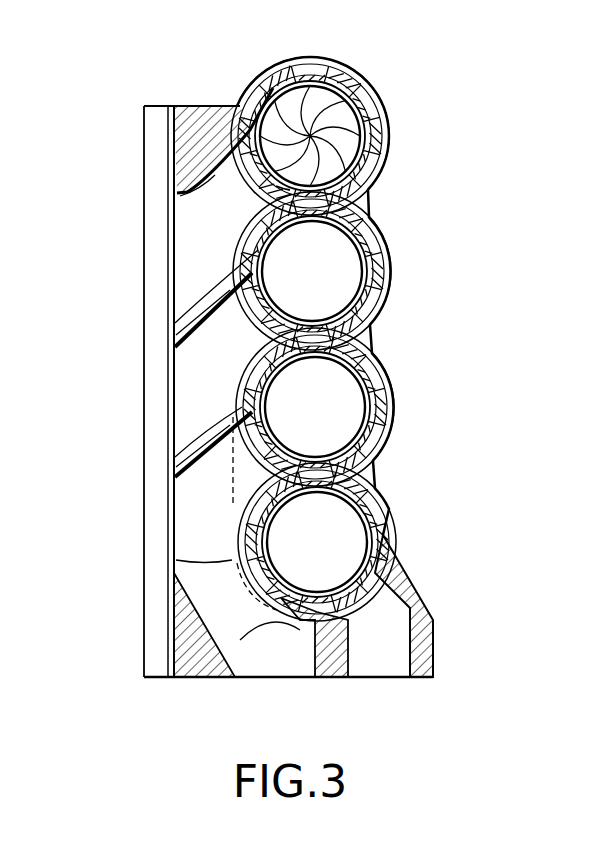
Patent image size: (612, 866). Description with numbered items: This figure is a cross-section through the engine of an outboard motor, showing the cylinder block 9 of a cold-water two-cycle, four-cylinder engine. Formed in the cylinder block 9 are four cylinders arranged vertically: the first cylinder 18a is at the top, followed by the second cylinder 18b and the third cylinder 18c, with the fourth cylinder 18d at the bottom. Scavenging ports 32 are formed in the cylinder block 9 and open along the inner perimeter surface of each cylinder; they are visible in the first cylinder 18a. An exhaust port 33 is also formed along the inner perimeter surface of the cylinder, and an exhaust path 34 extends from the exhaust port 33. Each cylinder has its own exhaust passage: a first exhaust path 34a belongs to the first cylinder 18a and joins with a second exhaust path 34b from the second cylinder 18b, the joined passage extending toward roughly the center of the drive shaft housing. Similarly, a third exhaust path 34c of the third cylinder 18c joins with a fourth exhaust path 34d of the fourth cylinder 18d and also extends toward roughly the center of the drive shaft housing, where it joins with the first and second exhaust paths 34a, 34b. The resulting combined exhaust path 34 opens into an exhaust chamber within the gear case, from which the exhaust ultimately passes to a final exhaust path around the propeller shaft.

The cylinder block 9 is at (357, 54).
The first cylinder 18a is at (384, 134).
The second cylinder 18b is at (392, 271).
The third cylinder 18c is at (384, 420).
The fourth cylinder 18d is at (388, 539).
The scavenging ports 32 is at (310, 136).
The exhaust port 33 is at (276, 186).
The exhaust path 34 is at (263, 662).
The first exhaust path 34a is at (217, 158).
The second exhaust path 34b is at (185, 312).
The third exhaust path 34c is at (180, 490).
The fourth exhaust path 34d is at (240, 583).